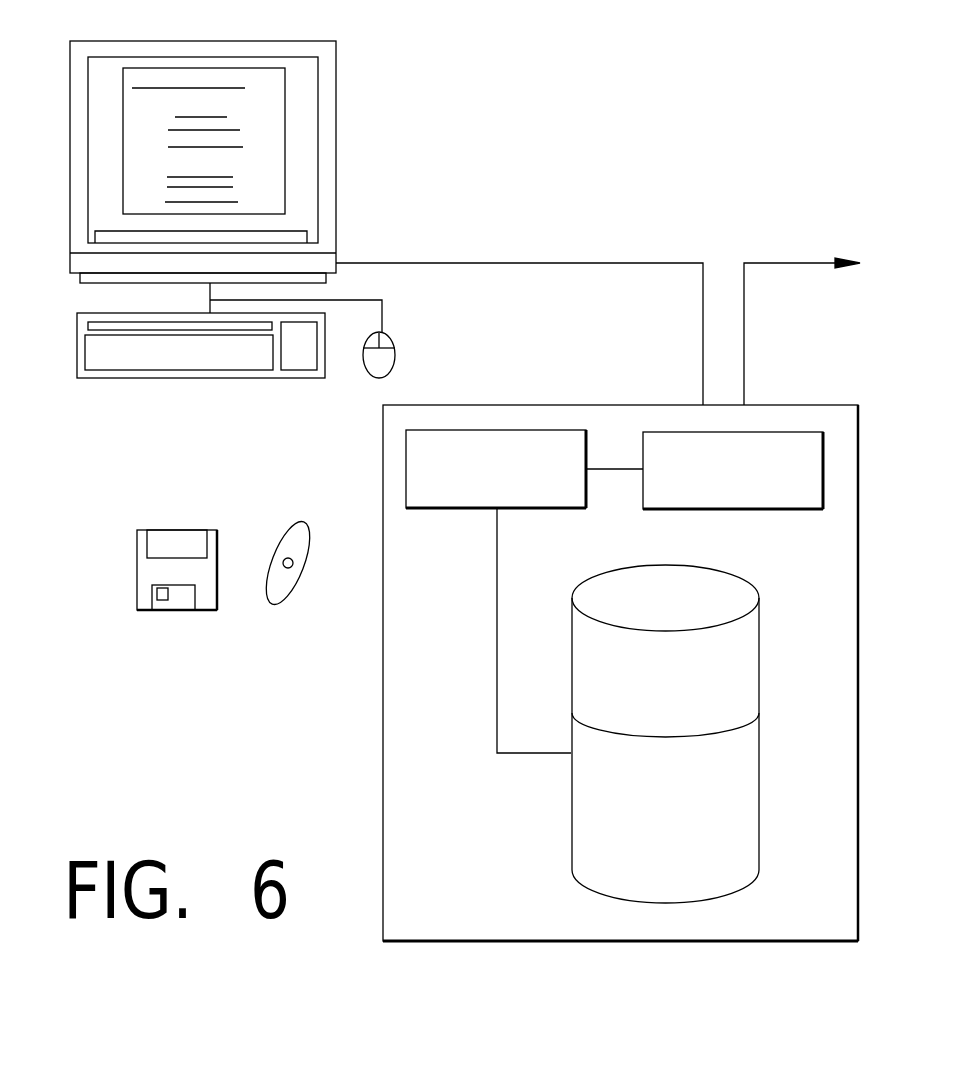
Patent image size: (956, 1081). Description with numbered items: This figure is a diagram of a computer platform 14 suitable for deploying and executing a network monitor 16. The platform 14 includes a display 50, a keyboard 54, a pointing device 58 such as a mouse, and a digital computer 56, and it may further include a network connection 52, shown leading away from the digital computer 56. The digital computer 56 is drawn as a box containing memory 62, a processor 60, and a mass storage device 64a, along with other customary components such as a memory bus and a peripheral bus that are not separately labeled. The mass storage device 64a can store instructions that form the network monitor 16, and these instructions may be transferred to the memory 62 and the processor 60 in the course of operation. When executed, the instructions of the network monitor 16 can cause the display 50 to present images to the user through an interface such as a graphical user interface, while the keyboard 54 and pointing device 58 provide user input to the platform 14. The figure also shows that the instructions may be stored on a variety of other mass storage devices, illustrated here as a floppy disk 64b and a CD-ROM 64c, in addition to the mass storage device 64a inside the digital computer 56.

The computer platform 14 is at (434, 331).
The network monitor 16 is at (337, 62).
The display 50 is at (272, 163).
The network connection 52 is at (771, 263).
The keyboard 54 is at (138, 378).
The digital computer 56 is at (383, 460).
The pointing device 58 is at (397, 357).
The processor 60 is at (782, 512).
The memory 62 is at (432, 510).
The mass storage device 64a is at (758, 812).
The floppy disk 64b is at (170, 530).
The CD-ROM 64c is at (312, 538).